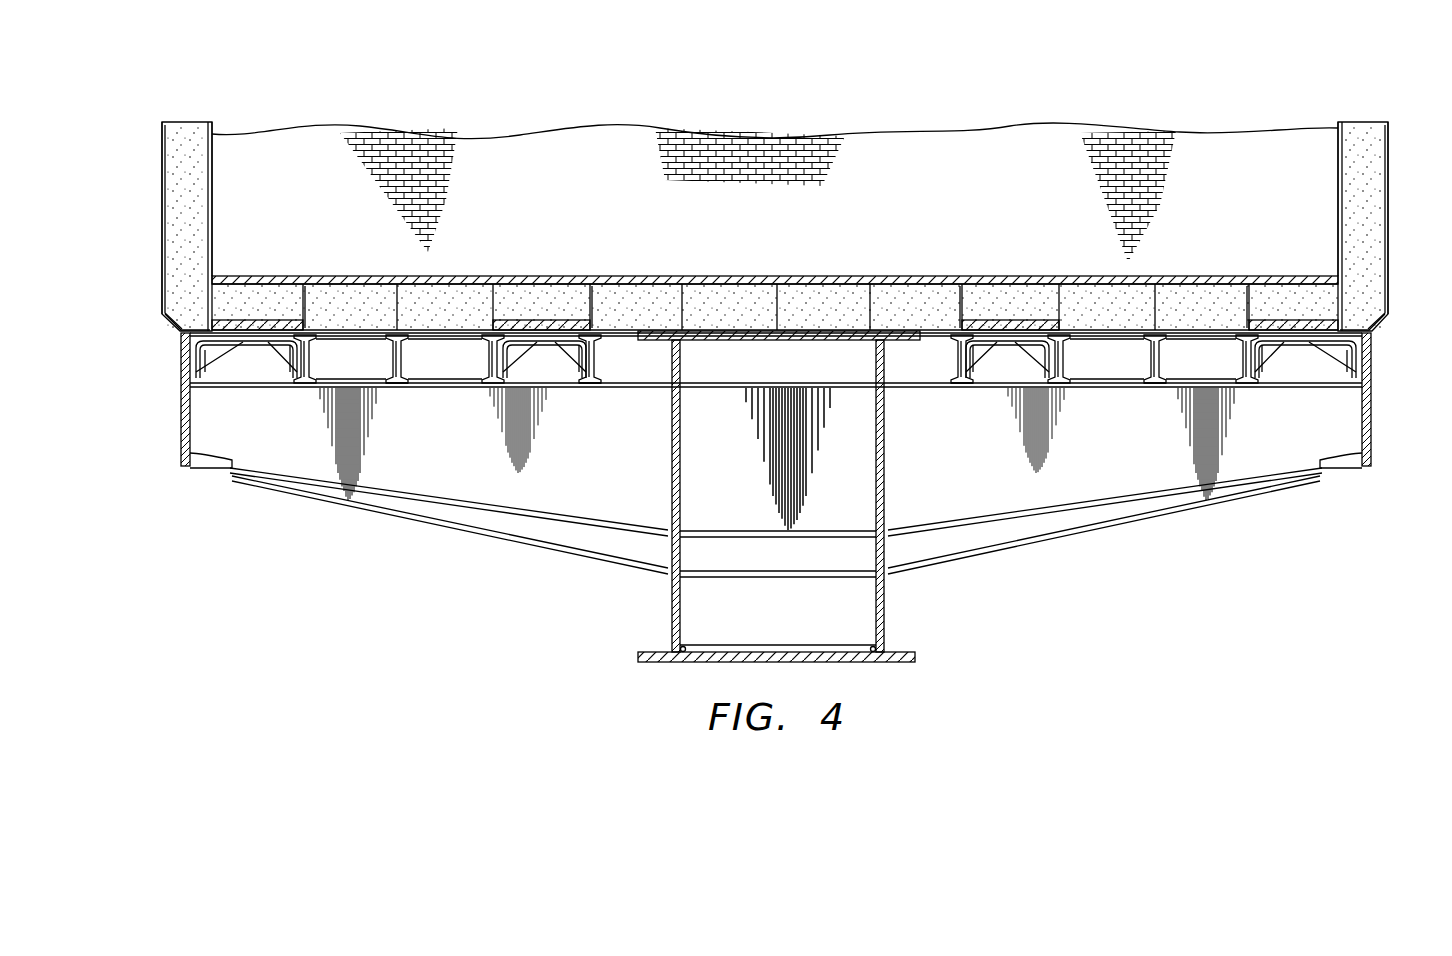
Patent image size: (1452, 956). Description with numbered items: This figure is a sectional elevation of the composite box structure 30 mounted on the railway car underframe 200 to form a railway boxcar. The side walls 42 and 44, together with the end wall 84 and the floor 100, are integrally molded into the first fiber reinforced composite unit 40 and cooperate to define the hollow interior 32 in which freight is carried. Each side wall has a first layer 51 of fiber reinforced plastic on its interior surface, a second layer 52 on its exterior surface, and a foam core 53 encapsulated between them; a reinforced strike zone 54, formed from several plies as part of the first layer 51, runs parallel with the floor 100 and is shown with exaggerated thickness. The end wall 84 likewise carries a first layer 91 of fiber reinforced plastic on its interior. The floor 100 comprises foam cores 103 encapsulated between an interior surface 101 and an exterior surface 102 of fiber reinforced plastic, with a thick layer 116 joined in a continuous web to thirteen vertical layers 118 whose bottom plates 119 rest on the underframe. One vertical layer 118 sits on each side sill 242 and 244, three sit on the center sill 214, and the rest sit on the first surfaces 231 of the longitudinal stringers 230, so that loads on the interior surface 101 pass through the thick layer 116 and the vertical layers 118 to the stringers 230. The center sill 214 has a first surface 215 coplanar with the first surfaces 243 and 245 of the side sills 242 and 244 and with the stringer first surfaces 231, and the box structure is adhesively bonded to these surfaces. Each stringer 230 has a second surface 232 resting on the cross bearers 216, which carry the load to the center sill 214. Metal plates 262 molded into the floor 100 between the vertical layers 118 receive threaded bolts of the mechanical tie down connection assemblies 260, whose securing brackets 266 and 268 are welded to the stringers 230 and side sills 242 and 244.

The composite box structure 30 is at (1392, 128).
The hollow interior 32 is at (536, 194).
The first fiber reinforced composite unit 40 is at (158, 128).
The side wall 42 is at (162, 200).
The side wall 44 is at (1390, 222).
The first layer 51 is at (214, 136).
The second layer 52 is at (162, 168).
The foam core 53 is at (190, 130).
The reinforced strike zone 54 is at (216, 178).
The end wall 84 is at (316, 130).
The first layer 91 is at (784, 158).
The floor 100 is at (746, 278).
The interior surface 101 is at (804, 280).
The exterior surface 102 is at (808, 338).
The foam core 103 is at (306, 298).
The thick layer 116 is at (656, 276).
The vertical layer 118 is at (224, 298).
The bottom plate 119 is at (280, 322).
The railway car underframe 200 is at (1156, 590).
The center sill 214 is at (884, 608).
The first surface 215 is at (726, 338).
The cross bearer 216 is at (1076, 457).
The longitudinal stringer 230 is at (404, 366).
The first surface 231 is at (380, 334).
The second surface 232 is at (404, 388).
The side sill 242 is at (182, 402).
The first surface 243 is at (170, 332).
The side sill 244 is at (1374, 402).
The first surface 245 is at (1382, 332).
The mechanical tie down connection assembly 260 is at (216, 356).
The metal plate 262 is at (256, 344).
The securing bracket 266 is at (492, 350).
The securing bracket 268 is at (290, 360).